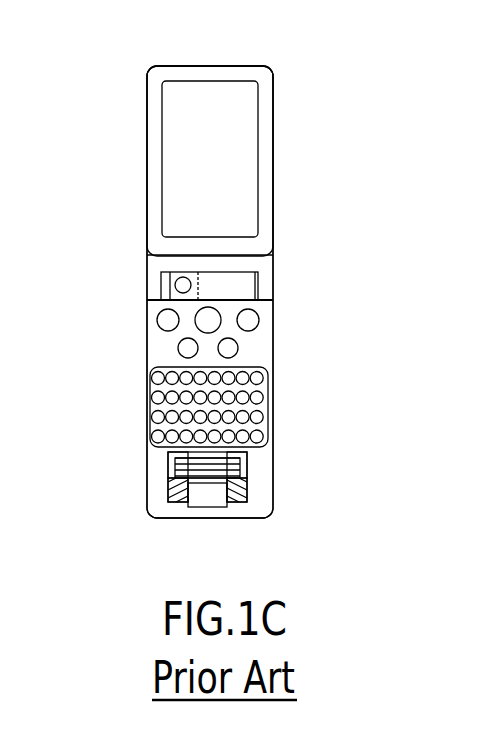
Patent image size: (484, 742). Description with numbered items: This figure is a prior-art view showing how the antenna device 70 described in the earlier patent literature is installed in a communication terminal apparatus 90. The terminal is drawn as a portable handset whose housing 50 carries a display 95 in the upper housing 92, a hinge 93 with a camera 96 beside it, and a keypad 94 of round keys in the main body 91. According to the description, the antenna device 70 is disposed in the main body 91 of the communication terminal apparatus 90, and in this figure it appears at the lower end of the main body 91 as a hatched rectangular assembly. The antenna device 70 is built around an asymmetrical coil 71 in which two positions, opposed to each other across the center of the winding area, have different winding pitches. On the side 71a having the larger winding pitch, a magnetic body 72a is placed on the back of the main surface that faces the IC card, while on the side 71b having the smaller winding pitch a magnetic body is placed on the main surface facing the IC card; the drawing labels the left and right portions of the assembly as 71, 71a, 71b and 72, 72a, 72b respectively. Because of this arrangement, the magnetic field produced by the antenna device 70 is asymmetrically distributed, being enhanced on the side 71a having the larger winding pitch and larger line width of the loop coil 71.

The communication terminal apparatus 90 is at (222, 66).
The housing 50 is at (228, 518).
The display 95 is at (258, 141).
The upper housing 92 is at (147, 173).
The hinge 93 is at (250, 280).
The camera 96 is at (161, 292).
The main body 91 is at (150, 400).
The keys 94 is at (252, 386).
The coil 71 is at (85, 452).
The side having a larger winding pitch 71a is at (168, 457).
The side having a smaller winding pitch 71b is at (168, 500).
The right connector side 72 is at (328, 452).
The magnetic body 72a is at (247, 466).
The right lower connector part 72b is at (247, 497).
The antenna device 70 is at (200, 500).